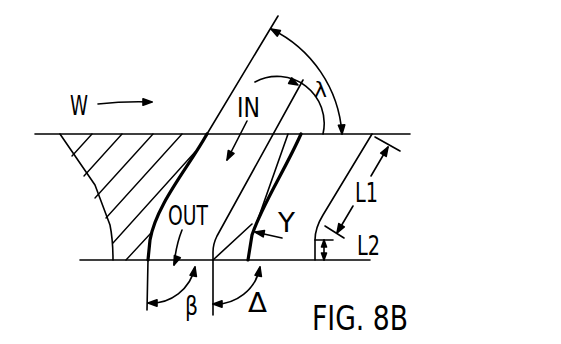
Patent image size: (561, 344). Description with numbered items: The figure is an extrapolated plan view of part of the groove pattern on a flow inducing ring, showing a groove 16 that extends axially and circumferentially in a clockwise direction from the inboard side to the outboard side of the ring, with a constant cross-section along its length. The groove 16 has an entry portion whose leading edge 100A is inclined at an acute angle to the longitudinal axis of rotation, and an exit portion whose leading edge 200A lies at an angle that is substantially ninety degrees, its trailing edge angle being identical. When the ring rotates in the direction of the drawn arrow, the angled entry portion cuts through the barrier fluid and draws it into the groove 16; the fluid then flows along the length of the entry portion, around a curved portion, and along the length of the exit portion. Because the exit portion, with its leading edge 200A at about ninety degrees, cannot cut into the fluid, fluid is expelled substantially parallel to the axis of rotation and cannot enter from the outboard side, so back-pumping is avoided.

The groove 16 is at (160, 239).
The leading edge of the entry portion 100A is at (370, 134).
The leading edge of the exit portion 200A is at (315, 260).